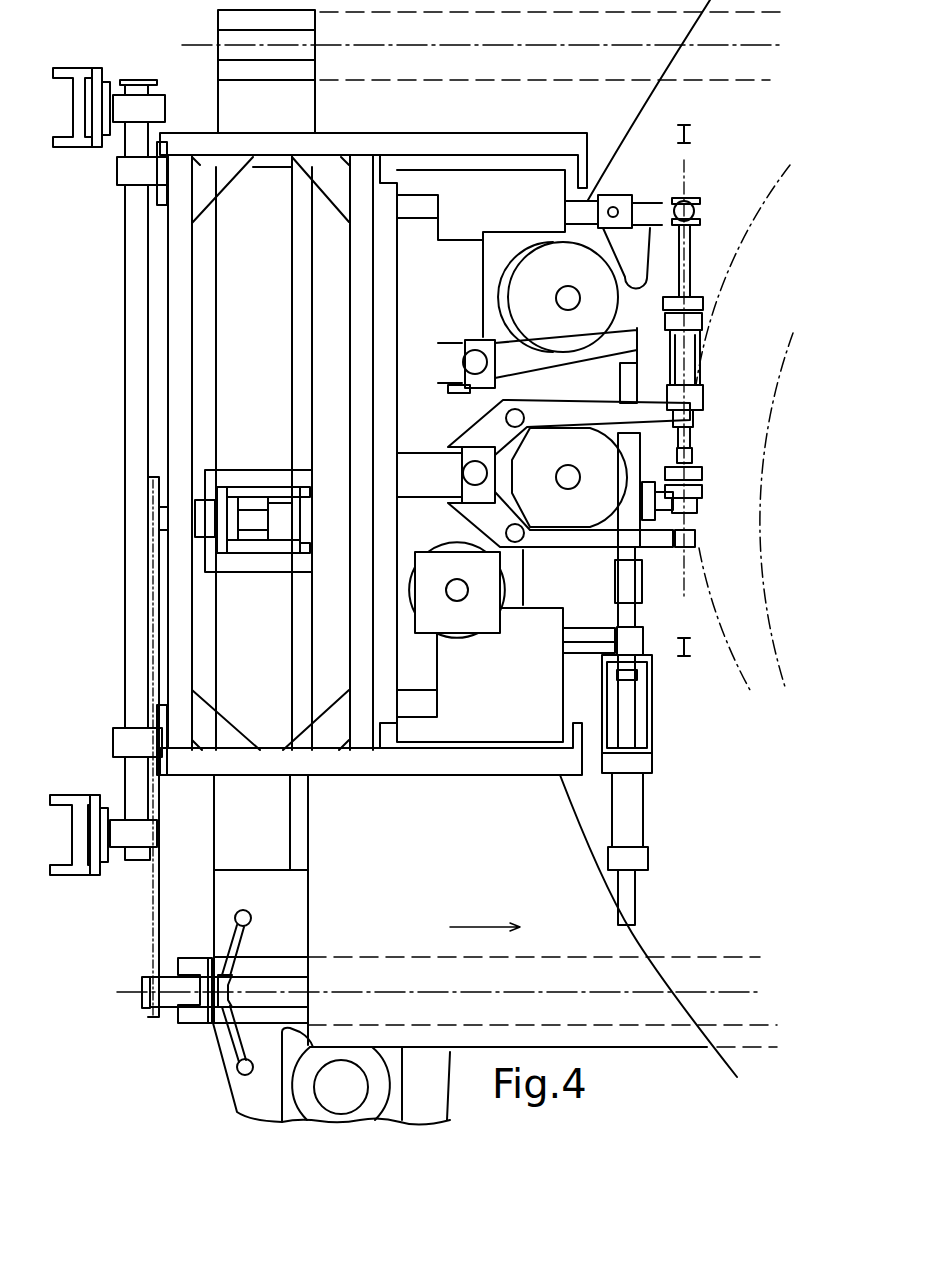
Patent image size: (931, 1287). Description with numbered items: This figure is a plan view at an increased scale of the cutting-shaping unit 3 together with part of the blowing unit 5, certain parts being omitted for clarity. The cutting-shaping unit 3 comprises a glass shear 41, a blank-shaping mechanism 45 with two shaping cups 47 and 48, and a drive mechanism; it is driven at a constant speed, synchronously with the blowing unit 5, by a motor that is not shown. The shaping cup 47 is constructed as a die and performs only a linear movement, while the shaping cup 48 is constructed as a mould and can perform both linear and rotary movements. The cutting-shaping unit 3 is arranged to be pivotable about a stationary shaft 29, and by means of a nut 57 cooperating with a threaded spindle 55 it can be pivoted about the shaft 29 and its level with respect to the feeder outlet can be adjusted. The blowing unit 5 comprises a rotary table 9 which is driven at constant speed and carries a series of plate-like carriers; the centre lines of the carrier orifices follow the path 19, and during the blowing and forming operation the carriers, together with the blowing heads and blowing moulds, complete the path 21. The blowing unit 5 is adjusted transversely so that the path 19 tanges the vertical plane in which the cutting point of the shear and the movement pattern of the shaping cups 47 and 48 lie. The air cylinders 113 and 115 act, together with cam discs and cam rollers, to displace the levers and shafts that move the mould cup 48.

The cutting-shaping unit 3 is at (434, 829).
The blowing unit 5 is at (438, 934).
The rotary table 9 is at (633, 943).
The path of carrier orifice centre lines 19 is at (768, 198).
The path of carriers in blowing position 21 is at (760, 410).
The stationary shaft 29 is at (135, 265).
The glass shear 41 is at (553, 550).
The blank-shaping mechanism 45 is at (649, 481).
The shaping cup 47 is at (702, 473).
The shaping cup 48 is at (704, 530).
The threaded spindle 55 is at (470, 594).
The nut 57 is at (467, 620).
The air cylinder 113 is at (613, 820).
The air cylinder 115 is at (628, 849).